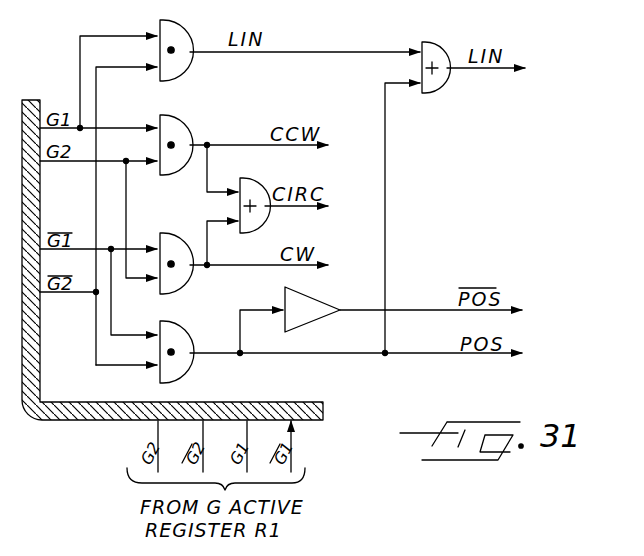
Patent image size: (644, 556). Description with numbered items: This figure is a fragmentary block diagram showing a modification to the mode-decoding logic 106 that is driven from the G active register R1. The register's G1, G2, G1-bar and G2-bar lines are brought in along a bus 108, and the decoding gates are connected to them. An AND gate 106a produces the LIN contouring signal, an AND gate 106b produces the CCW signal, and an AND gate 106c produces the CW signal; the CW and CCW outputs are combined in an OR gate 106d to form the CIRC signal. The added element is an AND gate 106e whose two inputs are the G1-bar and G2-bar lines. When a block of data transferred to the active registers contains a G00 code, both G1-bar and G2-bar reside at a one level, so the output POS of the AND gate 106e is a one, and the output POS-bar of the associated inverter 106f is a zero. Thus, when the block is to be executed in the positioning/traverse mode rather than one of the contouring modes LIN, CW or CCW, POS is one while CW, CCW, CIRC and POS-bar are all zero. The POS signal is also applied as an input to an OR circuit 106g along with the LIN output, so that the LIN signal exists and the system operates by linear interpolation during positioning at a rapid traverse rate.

The logic circuit 106 is at (280, 104).
The AND gate 106a is at (184, 72).
The AND gate 106b is at (178, 120).
The AND gate 106c is at (183, 283).
The OR gate 106d is at (262, 222).
The AND gate 106e is at (183, 372).
The inverter 106f is at (310, 326).
The OR circuit 106g is at (440, 88).
The G active register lines 108 is at (85, 418).